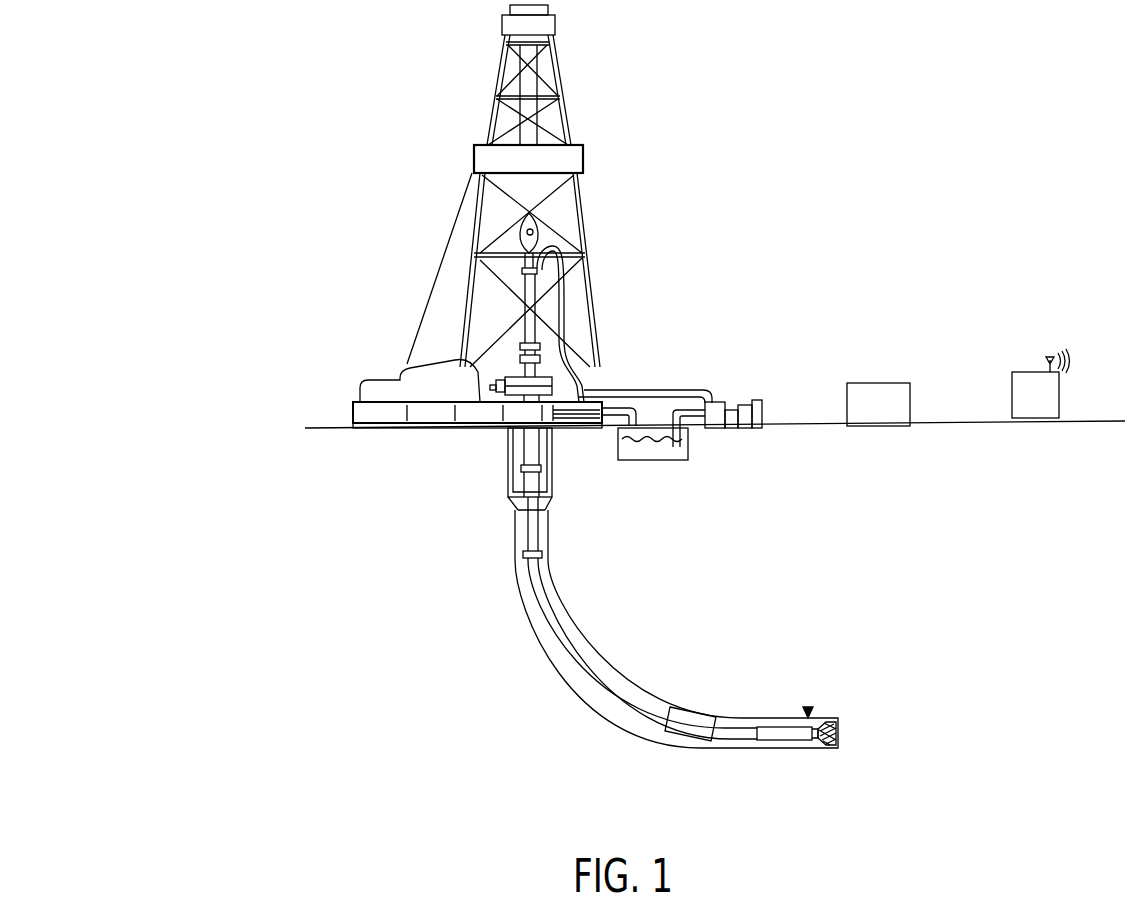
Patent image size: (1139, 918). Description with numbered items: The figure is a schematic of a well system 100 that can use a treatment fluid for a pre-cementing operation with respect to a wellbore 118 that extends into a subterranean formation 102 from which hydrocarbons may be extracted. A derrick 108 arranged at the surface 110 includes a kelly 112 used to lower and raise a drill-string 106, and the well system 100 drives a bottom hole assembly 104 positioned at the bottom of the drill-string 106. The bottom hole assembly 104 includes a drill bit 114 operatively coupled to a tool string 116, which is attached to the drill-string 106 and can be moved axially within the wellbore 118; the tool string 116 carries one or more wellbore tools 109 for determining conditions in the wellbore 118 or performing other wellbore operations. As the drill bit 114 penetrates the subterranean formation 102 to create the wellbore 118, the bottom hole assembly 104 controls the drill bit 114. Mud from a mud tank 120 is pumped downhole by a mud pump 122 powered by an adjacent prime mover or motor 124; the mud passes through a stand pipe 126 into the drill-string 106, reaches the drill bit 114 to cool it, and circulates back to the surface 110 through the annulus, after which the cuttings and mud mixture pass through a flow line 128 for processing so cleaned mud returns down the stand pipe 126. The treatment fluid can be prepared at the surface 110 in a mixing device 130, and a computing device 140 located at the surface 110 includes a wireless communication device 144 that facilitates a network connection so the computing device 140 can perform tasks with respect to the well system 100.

The well system 100 is at (126, 112).
The subterranean formation 102 is at (337, 478).
The bottom hole assembly 104 is at (768, 727).
The drill-string 106 is at (533, 578).
The derrick 108 is at (478, 220).
The wellbore tool 109 is at (690, 716).
The surface 110 is at (322, 426).
The kelly 112 is at (538, 232).
The drill bit 114 is at (838, 731).
The tool string 116 is at (808, 707).
The wellbore 118 is at (515, 542).
The mud tank 120 is at (659, 452).
The mud pump 122 is at (720, 403).
The motor 124 is at (762, 401).
The stand pipe 126 is at (568, 315).
The flow line 128 is at (635, 403).
The mixing device 130 is at (882, 393).
The computing device 140 is at (1025, 372).
The communication device 144 is at (1062, 356).